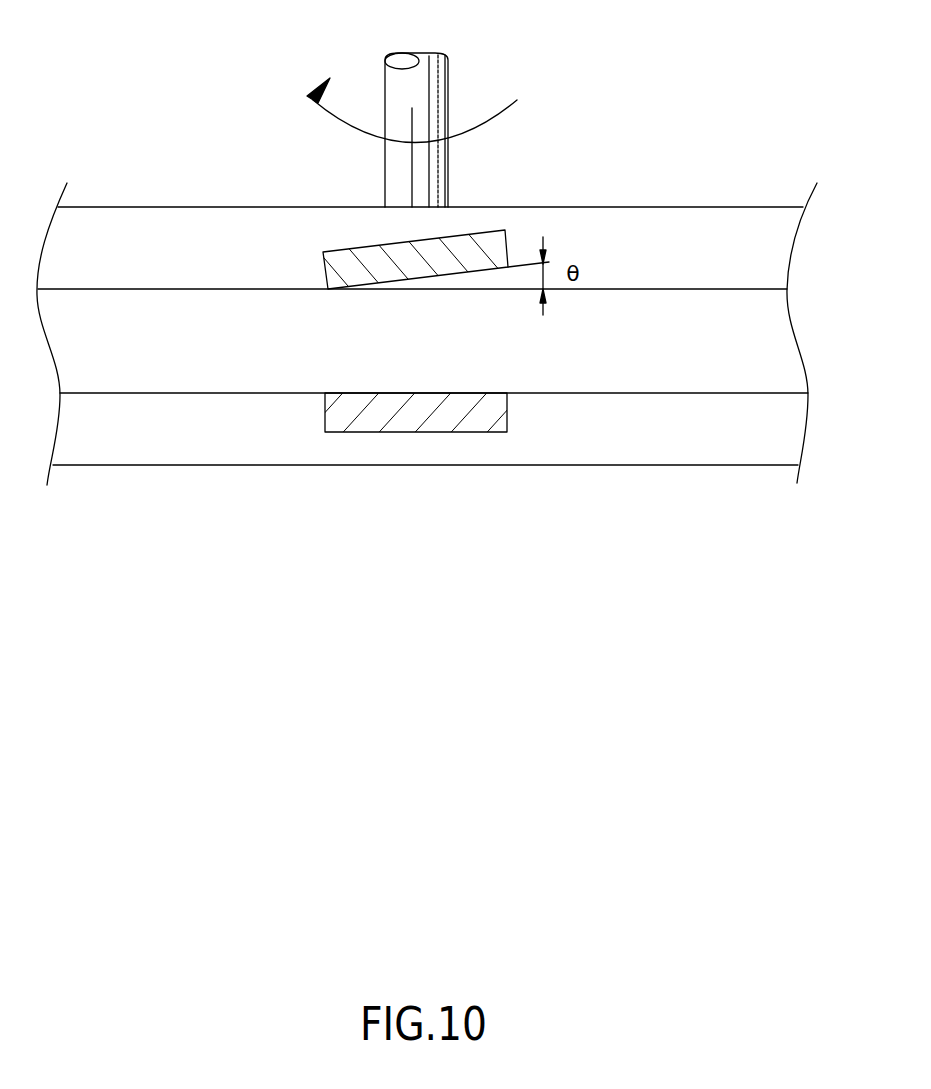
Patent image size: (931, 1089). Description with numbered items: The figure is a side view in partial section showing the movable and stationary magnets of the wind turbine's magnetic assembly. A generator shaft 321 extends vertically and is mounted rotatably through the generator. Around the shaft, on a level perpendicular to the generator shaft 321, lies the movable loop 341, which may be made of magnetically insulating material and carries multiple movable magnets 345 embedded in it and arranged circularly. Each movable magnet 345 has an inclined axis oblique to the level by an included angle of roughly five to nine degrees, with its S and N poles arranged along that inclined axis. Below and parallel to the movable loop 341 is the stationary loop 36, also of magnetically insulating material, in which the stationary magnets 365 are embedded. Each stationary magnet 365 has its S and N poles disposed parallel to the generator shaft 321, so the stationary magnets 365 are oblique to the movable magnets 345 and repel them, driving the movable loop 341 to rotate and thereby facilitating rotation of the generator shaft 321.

The generator shaft 321 is at (428, 85).
The movable loop 341 is at (178, 227).
The movable magnet 345 is at (487, 243).
The stationary loop 36 is at (178, 445).
The stationary magnet 365 is at (492, 425).